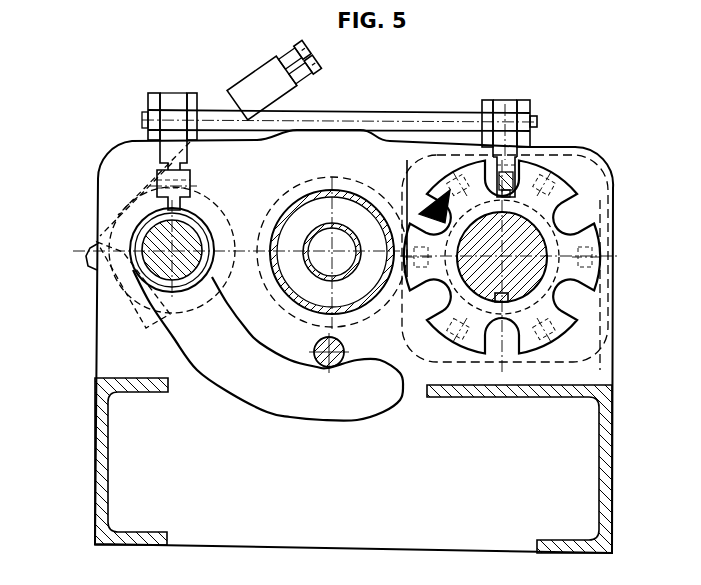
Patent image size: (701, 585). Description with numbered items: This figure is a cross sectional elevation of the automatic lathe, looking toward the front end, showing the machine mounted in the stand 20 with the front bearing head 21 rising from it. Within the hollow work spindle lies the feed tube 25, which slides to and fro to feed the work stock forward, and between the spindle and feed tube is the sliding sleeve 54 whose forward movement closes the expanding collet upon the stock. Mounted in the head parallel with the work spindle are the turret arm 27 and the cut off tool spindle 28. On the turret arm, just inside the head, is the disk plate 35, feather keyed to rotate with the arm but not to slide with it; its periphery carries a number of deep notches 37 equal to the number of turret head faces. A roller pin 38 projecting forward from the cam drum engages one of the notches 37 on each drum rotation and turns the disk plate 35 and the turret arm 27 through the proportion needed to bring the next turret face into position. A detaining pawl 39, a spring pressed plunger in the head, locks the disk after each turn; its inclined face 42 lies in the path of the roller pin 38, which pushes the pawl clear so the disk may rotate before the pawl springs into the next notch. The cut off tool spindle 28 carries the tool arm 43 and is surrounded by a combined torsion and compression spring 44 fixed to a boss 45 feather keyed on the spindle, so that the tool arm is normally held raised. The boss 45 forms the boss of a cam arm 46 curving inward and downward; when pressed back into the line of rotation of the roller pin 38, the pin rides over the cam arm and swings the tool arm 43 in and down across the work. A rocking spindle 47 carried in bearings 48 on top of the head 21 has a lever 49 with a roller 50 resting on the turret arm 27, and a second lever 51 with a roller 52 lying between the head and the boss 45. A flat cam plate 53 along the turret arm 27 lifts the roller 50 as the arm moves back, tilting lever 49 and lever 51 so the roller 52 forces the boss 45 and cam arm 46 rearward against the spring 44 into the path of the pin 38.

The stand 20 is at (353, 465).
The bearing head 21 is at (110, 199).
The feed tube 25 is at (332, 253).
The turret arm 27 is at (536, 258).
The cut off tool spindle 28 is at (160, 246).
The disk plate 35 is at (565, 170).
The notches 37 is at (567, 212).
The roller pin 38 is at (345, 350).
The detaining pawl 39 is at (432, 197).
The inclined face 42 is at (410, 195).
The tool arm 43 is at (253, 82).
The combined torsion and compression spring 44 is at (200, 213).
The boss 45 is at (150, 208).
The cam arm 46 is at (268, 345).
The rocking spindle 47 is at (457, 110).
The bearings 48 is at (535, 102).
The lever 49 is at (503, 113).
The roller 50 is at (522, 167).
The lever 51 is at (172, 94).
The roller 52 is at (160, 175).
The flat cam plate 53 is at (508, 303).
The sliding sleeve 54 is at (347, 190).